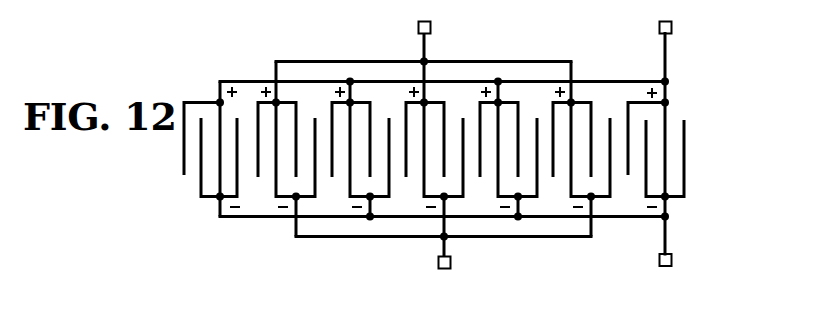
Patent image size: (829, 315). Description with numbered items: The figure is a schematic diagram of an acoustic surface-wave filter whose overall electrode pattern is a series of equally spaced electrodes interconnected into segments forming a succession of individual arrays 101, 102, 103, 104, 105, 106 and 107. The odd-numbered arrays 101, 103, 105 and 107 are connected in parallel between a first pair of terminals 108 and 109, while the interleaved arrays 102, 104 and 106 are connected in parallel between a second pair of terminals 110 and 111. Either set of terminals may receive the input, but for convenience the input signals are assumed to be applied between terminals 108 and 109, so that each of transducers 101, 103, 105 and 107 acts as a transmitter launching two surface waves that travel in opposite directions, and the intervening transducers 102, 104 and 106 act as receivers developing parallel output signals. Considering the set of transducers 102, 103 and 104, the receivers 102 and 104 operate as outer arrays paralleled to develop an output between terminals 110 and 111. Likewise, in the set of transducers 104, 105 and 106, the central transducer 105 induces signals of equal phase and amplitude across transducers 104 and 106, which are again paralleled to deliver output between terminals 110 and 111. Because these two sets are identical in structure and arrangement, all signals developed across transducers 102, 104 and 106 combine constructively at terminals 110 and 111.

The array 101 is at (208, 206).
The array 102 is at (268, 202).
The array 103 is at (341, 202).
The array 104 is at (416, 202).
The array 105 is at (494, 204).
The array 106 is at (610, 210).
The array 107 is at (692, 200).
The terminal 108 is at (672, 28).
The terminal 109 is at (672, 261).
The terminal 110 is at (430, 27).
The terminal 111 is at (445, 268).